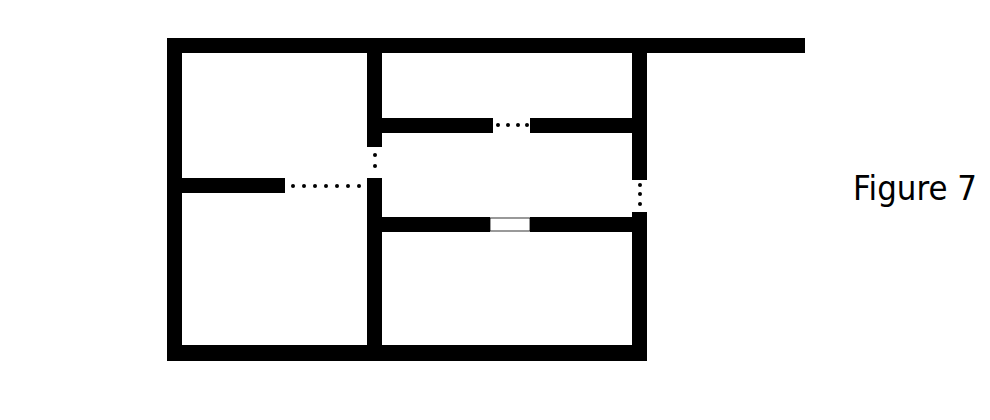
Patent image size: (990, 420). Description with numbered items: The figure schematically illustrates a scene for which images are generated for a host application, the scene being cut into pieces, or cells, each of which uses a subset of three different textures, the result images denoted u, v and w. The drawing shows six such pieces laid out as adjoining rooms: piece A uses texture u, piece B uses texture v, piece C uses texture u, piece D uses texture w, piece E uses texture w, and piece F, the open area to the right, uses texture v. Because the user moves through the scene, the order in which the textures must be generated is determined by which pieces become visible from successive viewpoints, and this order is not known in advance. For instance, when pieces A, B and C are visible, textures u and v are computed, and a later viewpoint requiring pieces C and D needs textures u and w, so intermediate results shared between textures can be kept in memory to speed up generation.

The piece A is at (274, 269).
The piece B is at (267, 115).
The piece C is at (510, 192).
The piece D is at (507, 92).
The piece E is at (514, 286).
The piece F is at (718, 130).